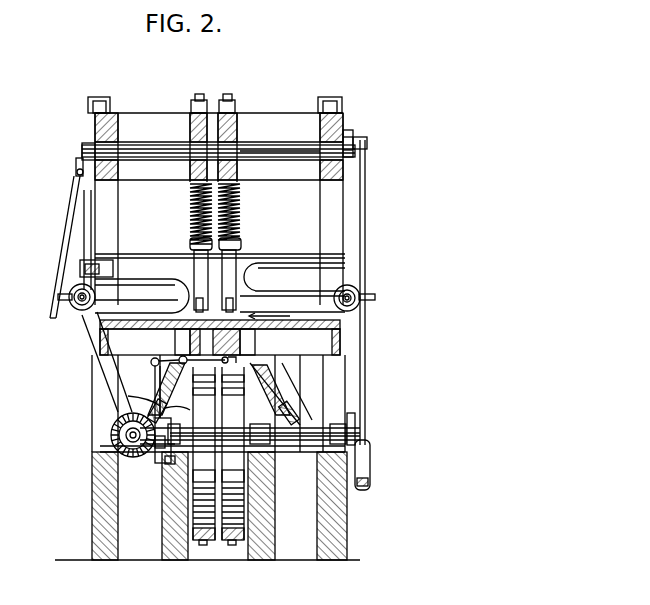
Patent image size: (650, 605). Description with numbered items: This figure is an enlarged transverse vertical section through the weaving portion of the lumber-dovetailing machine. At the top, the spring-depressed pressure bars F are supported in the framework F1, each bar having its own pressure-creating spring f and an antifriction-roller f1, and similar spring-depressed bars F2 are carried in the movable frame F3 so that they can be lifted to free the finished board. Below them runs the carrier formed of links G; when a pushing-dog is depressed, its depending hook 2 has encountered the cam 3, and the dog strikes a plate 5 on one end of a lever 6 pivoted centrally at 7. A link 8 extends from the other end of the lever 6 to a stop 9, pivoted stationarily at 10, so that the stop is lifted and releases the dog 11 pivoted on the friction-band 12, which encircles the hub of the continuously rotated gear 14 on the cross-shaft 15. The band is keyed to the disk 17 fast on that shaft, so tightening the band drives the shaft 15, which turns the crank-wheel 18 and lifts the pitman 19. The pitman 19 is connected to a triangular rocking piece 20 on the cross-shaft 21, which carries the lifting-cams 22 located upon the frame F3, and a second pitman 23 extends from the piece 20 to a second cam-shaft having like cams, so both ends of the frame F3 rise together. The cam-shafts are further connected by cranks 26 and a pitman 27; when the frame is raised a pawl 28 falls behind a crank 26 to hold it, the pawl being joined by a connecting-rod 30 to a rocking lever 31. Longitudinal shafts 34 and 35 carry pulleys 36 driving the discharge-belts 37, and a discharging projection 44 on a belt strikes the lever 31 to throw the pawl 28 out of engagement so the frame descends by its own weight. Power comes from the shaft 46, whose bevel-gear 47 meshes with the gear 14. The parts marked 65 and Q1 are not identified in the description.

The bolts 65 is at (240, 107).
The lifting-cams 22 is at (116, 148).
The cross-shaft 21 is at (266, 152).
The cranks 26 is at (83, 148).
The pawl 28 is at (77, 161).
The pitman 27 is at (77, 172).
The connecting-rod 30 is at (76, 189).
The movable frame F3 is at (265, 125).
The framework F1 is at (139, 171).
The pressure-creating spring f is at (189, 202).
The spring-depressed bars F2 is at (194, 254).
The antifriction-roller f1 is at (196, 303).
The spring-depressed bars F is at (236, 271).
The discharging projections 44 is at (62, 296).
The shaft 34 is at (78, 309).
The rocking lever 31 is at (70, 301).
The pulleys 36 is at (72, 305).
The discharge-belts 37 is at (345, 286).
The shaft 35 is at (354, 292).
The links G is at (268, 333).
The cam 3 is at (188, 340).
The pivot 7 is at (158, 362).
The plate 5 is at (207, 361).
The depending hook 2 is at (230, 363).
The lever 6 is at (156, 374).
The link 8 is at (153, 388).
The stop 9 is at (137, 400).
The struts Q1 is at (229, 394).
The pivot 10 is at (186, 408).
The shaft 46 is at (111, 436).
The bevel-gear 47 is at (116, 448).
The dog 11 is at (153, 413).
The gear 14 is at (152, 452).
The friction-band 12 is at (161, 452).
The disk 17 is at (170, 465).
The cross-shaft 15 is at (228, 431).
The pitman 19 is at (366, 214).
The pitman 23 is at (352, 131).
The triangular rocking piece 20 is at (360, 138).
The crank-wheel 18 is at (356, 426).